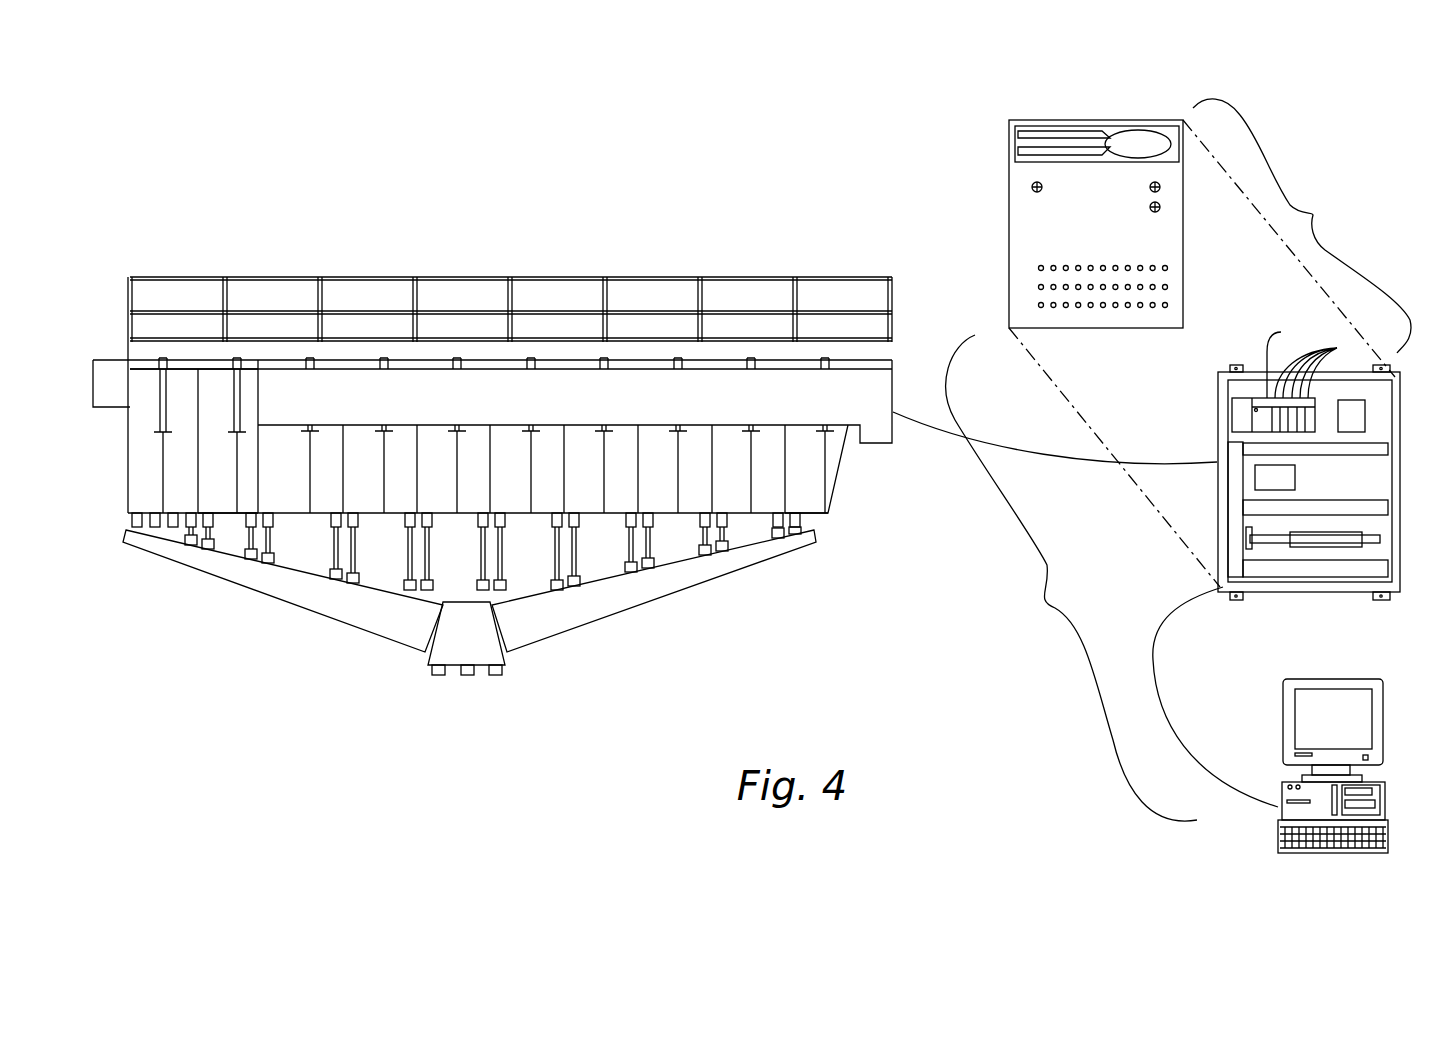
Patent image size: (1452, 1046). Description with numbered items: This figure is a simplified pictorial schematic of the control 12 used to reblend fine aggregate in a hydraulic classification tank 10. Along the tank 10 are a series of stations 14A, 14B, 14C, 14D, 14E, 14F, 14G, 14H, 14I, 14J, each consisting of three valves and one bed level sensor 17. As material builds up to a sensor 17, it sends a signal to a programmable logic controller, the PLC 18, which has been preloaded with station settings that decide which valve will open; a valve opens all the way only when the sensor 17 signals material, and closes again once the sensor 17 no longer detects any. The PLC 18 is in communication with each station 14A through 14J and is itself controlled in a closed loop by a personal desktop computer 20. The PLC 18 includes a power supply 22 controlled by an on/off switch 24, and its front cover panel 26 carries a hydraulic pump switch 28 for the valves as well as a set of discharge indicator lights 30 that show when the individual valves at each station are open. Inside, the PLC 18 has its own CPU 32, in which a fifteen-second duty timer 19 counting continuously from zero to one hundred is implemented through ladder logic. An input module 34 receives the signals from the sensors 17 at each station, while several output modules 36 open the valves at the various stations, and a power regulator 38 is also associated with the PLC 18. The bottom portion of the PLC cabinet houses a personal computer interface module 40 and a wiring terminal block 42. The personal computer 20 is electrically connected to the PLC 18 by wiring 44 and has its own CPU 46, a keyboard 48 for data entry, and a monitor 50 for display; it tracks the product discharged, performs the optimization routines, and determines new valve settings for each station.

The hydraulic classification tank 10 is at (683, 242).
The control 12 is at (1071, 578).
The station 14A is at (150, 488).
The station 14B is at (230, 508).
The station 14C is at (303, 507).
The station 14D is at (378, 507).
The station 14E is at (450, 507).
The station 14F is at (487, 507).
The station 14G is at (557, 507).
The station 14H is at (632, 507).
The station 14I is at (707, 507).
The station 14J is at (790, 492).
The bed level sensor 17 is at (158, 430).
The PLC 18 is at (1210, 343).
The duty timer 19 is at (1258, 398).
The personal desktop computer 20 is at (1306, 747).
The power supply 22 is at (1232, 412).
The on/off switch 24 is at (1033, 187).
The front cover panel 26 is at (1112, 120).
The hydraulic pump switch 28 is at (1160, 186).
The discharge indicator lights 30 is at (1038, 305).
The CPU 32 is at (1253, 385).
The input module 34 is at (1286, 358).
The output modules 36 is at (1319, 366).
The power regulator 38 is at (1345, 432).
The personal computer interface module 40 is at (1262, 476).
The wiring terminal block 42 is at (1380, 538).
The wiring 44 is at (1160, 676).
The CPU 46 is at (1283, 784).
The keyboard 48 is at (1278, 838).
The monitor 50 is at (1315, 683).